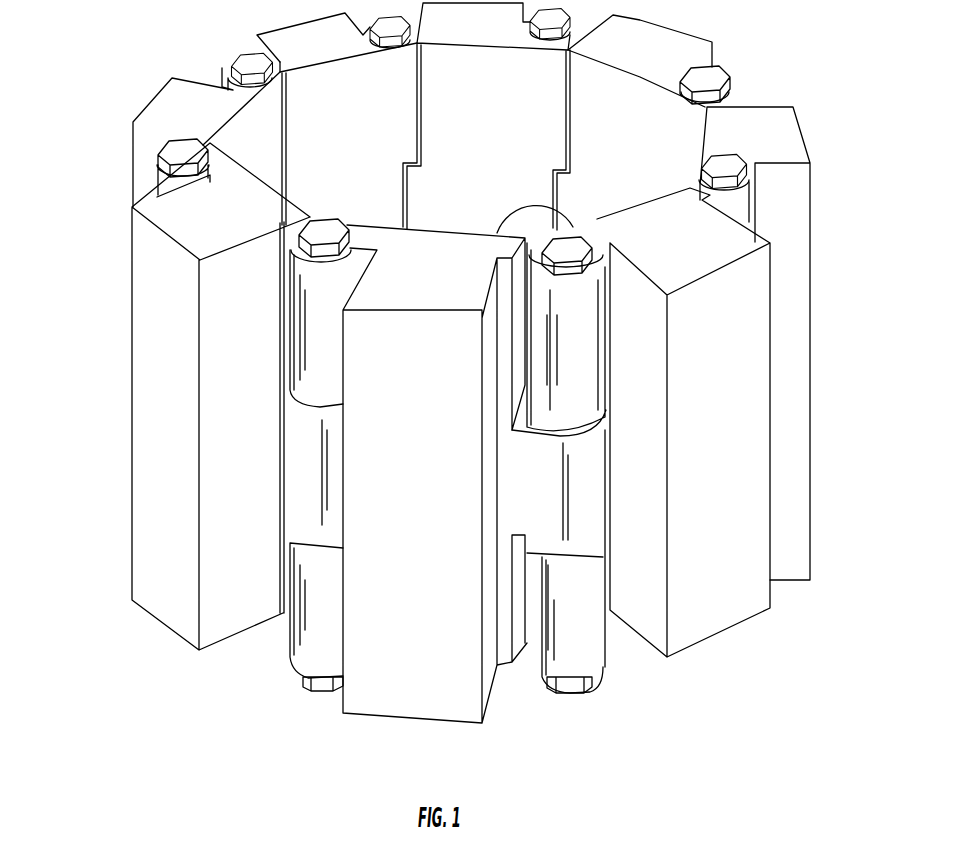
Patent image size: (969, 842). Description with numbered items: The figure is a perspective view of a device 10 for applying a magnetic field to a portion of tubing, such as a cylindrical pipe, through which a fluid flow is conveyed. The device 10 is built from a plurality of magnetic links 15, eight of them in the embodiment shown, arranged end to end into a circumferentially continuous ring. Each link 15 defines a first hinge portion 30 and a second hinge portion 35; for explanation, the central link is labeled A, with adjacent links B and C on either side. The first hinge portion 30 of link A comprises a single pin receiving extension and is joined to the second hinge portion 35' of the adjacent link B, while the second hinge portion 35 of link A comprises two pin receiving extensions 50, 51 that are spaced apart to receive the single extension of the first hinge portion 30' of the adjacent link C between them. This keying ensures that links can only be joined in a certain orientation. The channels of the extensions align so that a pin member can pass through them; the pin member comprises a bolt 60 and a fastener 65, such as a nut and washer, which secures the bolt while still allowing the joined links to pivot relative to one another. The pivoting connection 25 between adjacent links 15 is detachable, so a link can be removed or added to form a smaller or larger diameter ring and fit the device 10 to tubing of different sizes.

The device 10 is at (460, 392).
The magnetic link 15 is at (460, 291).
The pivoting connection 25 is at (250, 500).
The first hinge portion 30 is at (566, 447).
The first hinge portion 30' is at (230, 455).
The second hinge portion 35 is at (250, 484).
The second hinge portion 35' is at (639, 468).
The pin receiving extension 50 is at (205, 344).
The pin receiving extension 51 is at (263, 630).
The bolt 60 is at (582, 205).
The fastener 65 is at (588, 714).